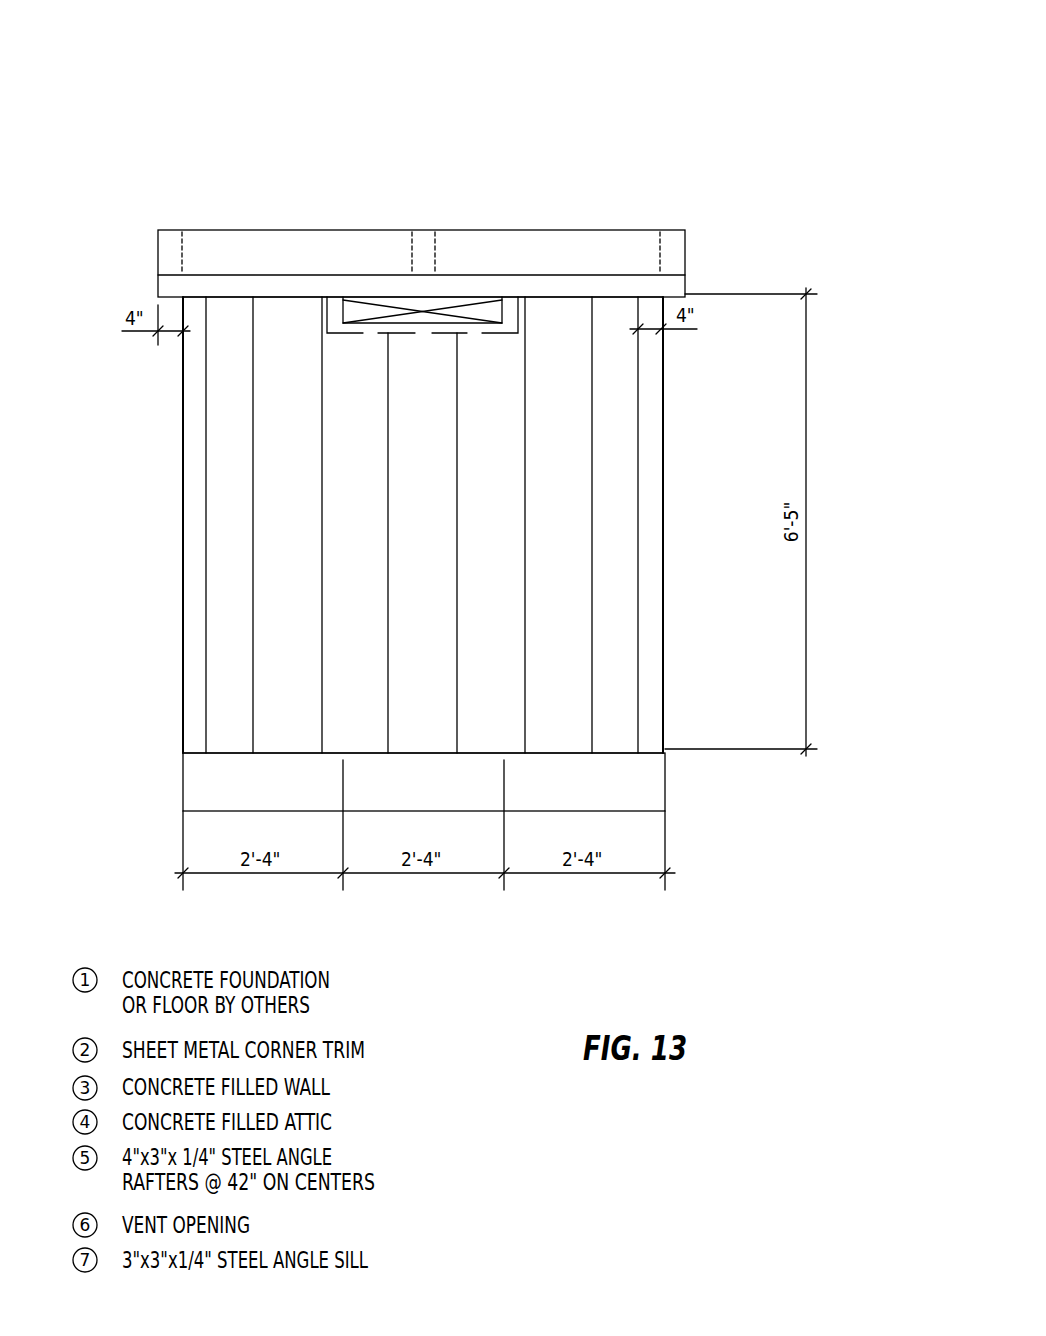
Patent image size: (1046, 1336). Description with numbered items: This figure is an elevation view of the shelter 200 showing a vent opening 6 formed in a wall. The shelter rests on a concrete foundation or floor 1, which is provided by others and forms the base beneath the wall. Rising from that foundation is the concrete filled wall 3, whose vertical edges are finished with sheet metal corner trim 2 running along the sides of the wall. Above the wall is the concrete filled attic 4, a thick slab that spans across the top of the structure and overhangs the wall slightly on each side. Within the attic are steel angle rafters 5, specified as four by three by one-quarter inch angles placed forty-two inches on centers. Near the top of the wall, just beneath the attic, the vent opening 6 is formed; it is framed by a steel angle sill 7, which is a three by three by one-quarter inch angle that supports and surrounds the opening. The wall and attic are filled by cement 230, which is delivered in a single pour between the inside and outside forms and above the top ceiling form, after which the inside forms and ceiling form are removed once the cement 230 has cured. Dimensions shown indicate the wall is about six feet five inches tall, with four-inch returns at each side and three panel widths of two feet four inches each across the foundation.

The concrete foundation or floor 1 is at (183, 785).
The sheet metal corner trim 2 is at (181, 525).
The concrete filled wall 3 is at (228, 384).
The concrete filled attic 4 is at (200, 255).
The steel angle rafters 5 is at (423, 228).
The vent opening 6 is at (455, 305).
The steel angle sill 7 is at (486, 314).
The building structure 200 is at (858, 10).
The cement 230 is at (560, 493).